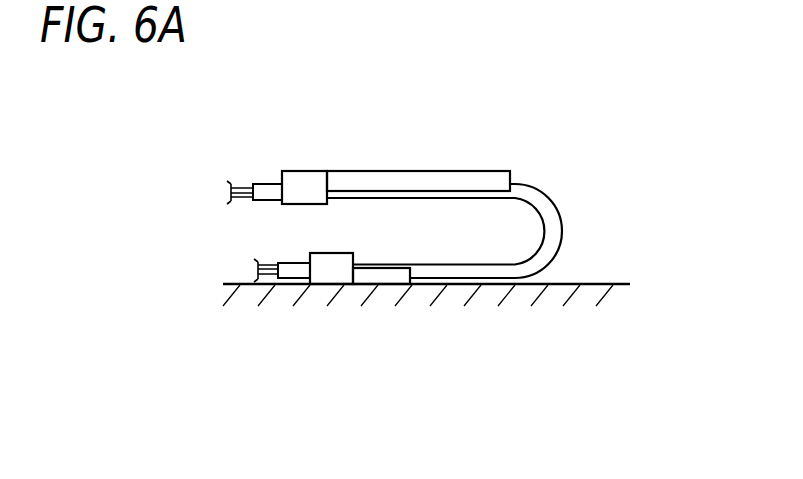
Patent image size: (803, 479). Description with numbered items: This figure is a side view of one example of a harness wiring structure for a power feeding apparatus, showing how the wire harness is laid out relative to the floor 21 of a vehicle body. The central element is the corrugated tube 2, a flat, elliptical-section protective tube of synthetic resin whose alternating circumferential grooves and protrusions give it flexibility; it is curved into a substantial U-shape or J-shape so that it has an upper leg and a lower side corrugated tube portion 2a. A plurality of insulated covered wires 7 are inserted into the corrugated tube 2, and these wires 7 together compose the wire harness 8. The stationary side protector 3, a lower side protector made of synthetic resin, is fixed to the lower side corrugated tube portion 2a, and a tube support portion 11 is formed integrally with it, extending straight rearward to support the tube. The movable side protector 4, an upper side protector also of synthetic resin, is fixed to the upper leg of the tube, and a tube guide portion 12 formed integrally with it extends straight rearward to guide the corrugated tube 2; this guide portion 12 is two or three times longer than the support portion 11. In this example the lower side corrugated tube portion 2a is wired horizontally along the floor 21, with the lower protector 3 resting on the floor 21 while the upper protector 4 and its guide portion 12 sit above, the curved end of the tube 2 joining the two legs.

The corrugated tube 2 is at (557, 202).
The lower side corrugated tube portion 2a is at (470, 273).
The stationary side protector 3 is at (351, 290).
The movable side protector 4 is at (328, 169).
The insulated covered wires 7 is at (243, 186).
The wire harness 8 is at (282, 270).
The tube support portion 11 is at (382, 286).
The tube guide portion 12 is at (402, 177).
The floor 21 is at (580, 282).